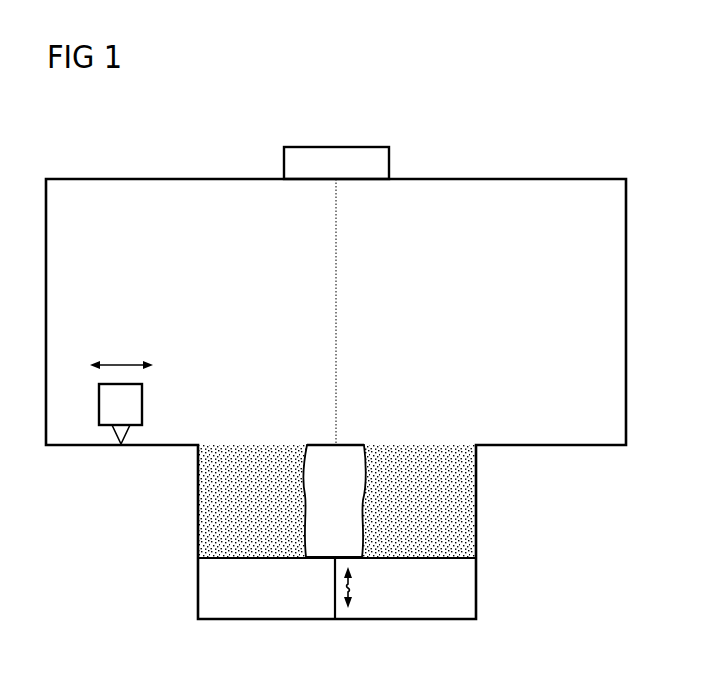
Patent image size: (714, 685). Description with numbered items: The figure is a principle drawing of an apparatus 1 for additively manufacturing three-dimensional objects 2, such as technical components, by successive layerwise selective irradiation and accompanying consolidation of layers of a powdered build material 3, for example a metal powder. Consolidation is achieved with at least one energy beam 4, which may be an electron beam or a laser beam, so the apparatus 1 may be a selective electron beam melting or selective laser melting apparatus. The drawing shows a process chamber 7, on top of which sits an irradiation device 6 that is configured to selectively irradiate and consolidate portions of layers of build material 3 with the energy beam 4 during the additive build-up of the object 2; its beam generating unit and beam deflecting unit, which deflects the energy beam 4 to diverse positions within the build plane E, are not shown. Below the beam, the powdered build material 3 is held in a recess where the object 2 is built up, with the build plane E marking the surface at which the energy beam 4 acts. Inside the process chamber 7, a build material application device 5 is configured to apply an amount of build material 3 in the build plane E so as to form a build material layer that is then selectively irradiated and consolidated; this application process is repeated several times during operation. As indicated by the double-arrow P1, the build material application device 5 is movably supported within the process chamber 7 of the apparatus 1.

The apparatus 1 is at (449, 112).
The three-dimensional object 2 is at (325, 507).
The powdered build material 3 is at (476, 500).
The energy beam 4 is at (336, 345).
The build material application device 5 is at (142, 405).
The irradiation device 6 is at (337, 147).
The process chamber 7 is at (626, 315).
The double-arrow P1 is at (123, 365).
The build plane E is at (319, 436).